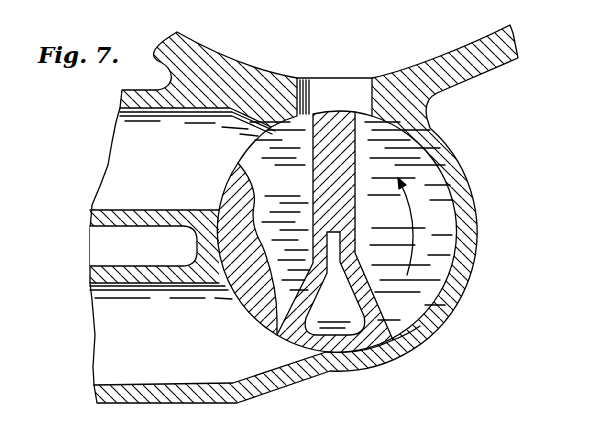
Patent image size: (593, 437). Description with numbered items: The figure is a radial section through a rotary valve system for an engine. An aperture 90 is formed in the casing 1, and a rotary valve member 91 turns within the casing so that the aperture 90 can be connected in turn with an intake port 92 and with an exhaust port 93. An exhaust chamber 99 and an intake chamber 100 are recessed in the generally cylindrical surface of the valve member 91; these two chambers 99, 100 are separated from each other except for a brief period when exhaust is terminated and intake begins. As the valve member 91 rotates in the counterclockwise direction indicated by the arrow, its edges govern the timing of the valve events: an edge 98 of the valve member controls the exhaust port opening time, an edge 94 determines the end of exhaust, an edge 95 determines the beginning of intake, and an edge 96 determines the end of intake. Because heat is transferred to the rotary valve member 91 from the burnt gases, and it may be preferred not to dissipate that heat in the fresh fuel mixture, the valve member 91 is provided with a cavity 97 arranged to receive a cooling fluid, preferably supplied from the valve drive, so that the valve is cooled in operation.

The casing 1 is at (473, 86).
The aperture 90 is at (335, 88).
The rotary valve member 91 is at (335, 231).
The intake port 92 is at (108, 334).
The exhaust port 93 is at (114, 183).
The edge 94 is at (313, 112).
The edge 95 is at (358, 112).
The edge 96 is at (394, 336).
The cavity 97 is at (344, 317).
The edge 98 is at (279, 336).
The exhaust chamber 99 is at (300, 190).
The intake chamber 100 is at (394, 221).